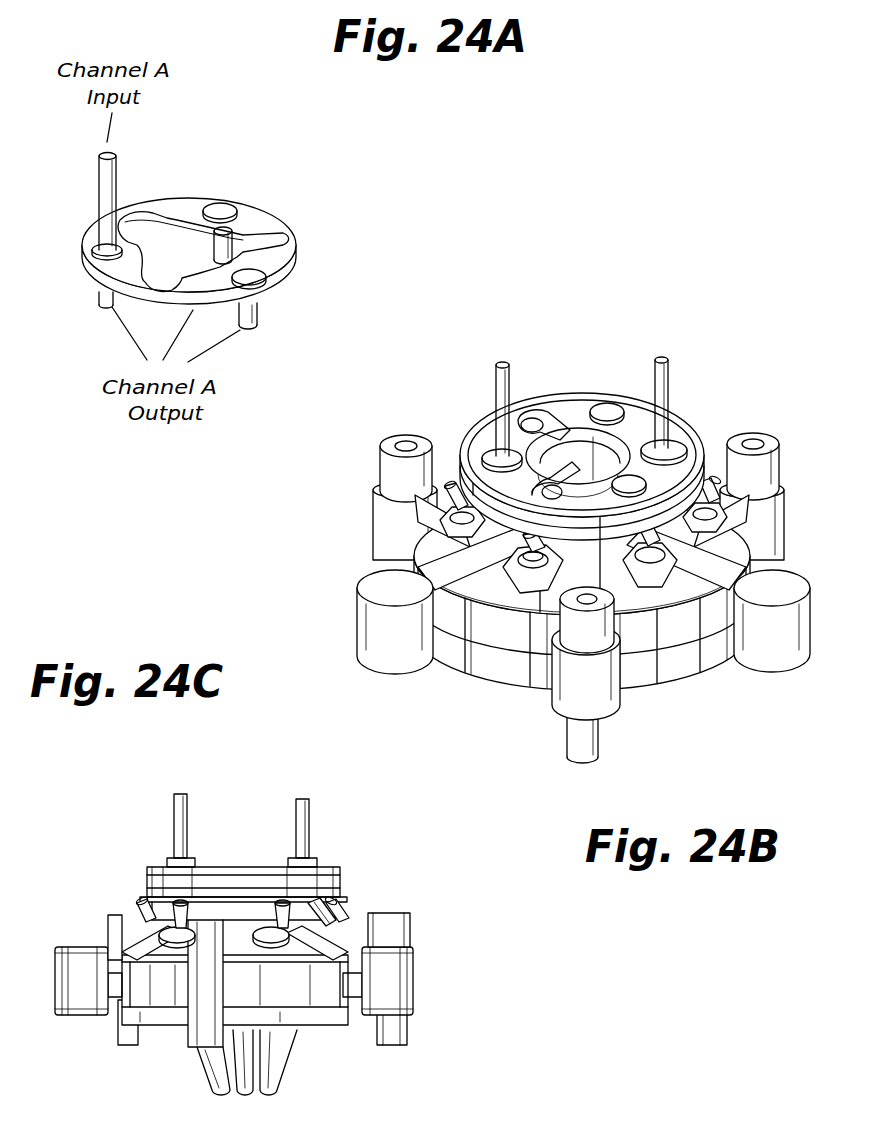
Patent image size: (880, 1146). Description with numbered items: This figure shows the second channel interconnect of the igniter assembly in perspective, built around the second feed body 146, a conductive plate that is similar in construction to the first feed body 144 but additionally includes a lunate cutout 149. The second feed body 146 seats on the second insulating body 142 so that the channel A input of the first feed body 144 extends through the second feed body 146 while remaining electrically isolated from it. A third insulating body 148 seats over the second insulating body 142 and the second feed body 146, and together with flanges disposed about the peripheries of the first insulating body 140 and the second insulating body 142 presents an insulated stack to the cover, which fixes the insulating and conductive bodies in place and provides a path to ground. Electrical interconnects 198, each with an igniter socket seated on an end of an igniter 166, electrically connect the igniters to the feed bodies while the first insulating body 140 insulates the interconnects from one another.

In FIG. 24B, the first insulating body 140 is at (673, 380).
In FIG. 24C, the first insulating body 140 is at (298, 816).
In FIG. 24B, the second insulating body 142 is at (457, 437).
In FIG. 24C, the second insulating body 142 is at (175, 804).
In FIG. 24C, the first feed body 144 is at (350, 896).
In FIG. 24A, the second feed body 146 is at (226, 163).
In FIG. 24B, the second feed body 146 is at (578, 413).
In FIG. 24C, the second feed body 146 is at (253, 866).
In FIG. 24C, the third insulating body 148 is at (162, 857).
In FIG. 24A, the lunate cutout 149 is at (267, 240).
In FIG. 24C, the igniter 166 is at (133, 937).
In FIG. 24B, the electrical interconnect 198 is at (527, 545).
In FIG. 24C, the electrical interconnect 198 is at (140, 910).